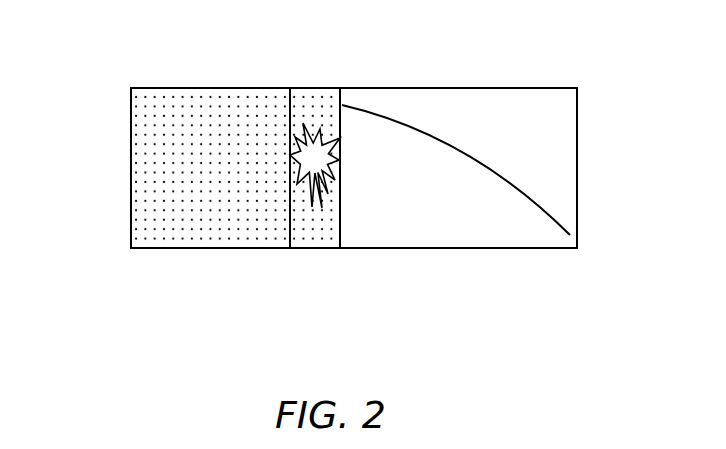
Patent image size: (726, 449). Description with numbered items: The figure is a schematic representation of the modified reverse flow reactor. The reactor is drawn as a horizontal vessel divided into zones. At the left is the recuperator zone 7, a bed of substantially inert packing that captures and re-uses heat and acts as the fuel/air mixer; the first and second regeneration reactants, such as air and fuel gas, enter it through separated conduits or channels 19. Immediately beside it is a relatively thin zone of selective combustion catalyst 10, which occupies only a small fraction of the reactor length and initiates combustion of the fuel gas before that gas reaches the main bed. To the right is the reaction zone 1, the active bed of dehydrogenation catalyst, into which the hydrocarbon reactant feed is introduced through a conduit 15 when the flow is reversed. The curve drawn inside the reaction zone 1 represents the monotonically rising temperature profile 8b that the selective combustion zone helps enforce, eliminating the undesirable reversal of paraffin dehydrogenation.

The reaction zone 1 is at (494, 88).
The recuperator zone 7 is at (192, 88).
The monotonically rising temperature profile 8b is at (472, 190).
The selective combustion catalyst 10 is at (313, 226).
The conduit 15 is at (592, 169).
The separated conduits or channels 19 is at (118, 170).